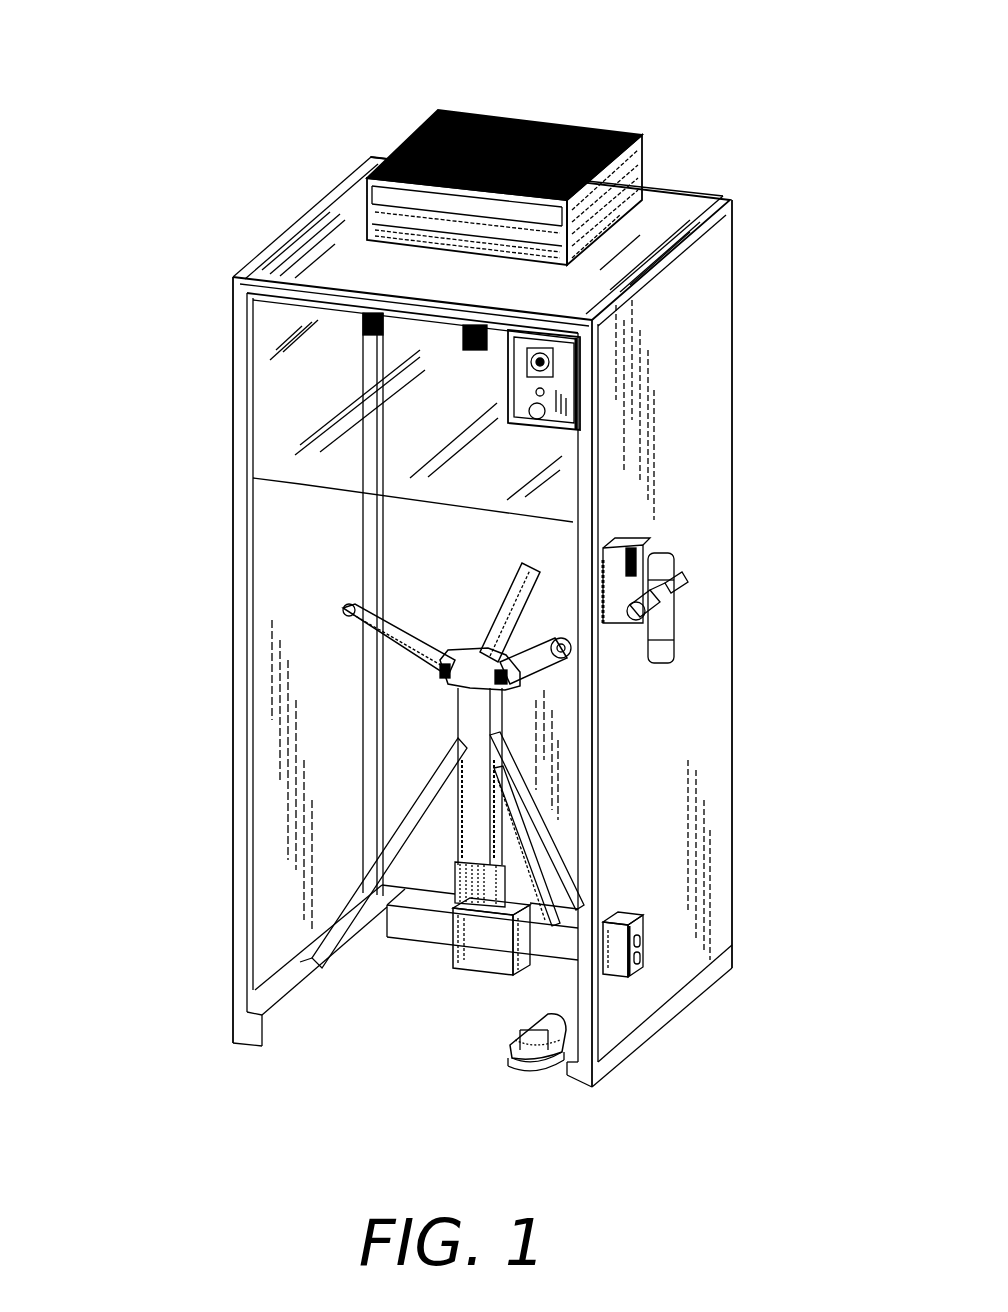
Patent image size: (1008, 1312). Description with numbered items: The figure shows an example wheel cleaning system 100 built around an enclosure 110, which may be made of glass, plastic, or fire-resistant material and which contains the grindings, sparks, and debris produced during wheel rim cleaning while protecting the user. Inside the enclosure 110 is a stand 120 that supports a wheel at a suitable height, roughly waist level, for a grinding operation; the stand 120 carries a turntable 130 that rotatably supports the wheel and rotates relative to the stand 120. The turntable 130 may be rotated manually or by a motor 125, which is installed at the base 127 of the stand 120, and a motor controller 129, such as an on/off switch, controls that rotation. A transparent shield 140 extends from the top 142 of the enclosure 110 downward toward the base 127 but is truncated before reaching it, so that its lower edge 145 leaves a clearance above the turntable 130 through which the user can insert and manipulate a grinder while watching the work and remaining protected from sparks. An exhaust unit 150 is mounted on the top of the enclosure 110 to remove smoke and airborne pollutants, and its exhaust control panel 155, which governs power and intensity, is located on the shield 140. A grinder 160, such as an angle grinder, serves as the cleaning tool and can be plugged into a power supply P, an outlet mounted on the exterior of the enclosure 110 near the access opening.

The wheel cleaning system 100 is at (226, 149).
The enclosure 110 is at (735, 333).
The stand 120 is at (474, 810).
The motor 125 is at (483, 945).
The base 127 is at (420, 928).
The motor controller 129 is at (539, 1075).
The turntable 130 is at (357, 622).
The shield 140 is at (297, 393).
The top 142 is at (245, 284).
The lower edge 145 is at (288, 487).
The exhaust unit 150 is at (607, 135).
The exhaust control panel 155 is at (560, 378).
The grinder 160 is at (660, 617).
The power supply P is at (625, 963).